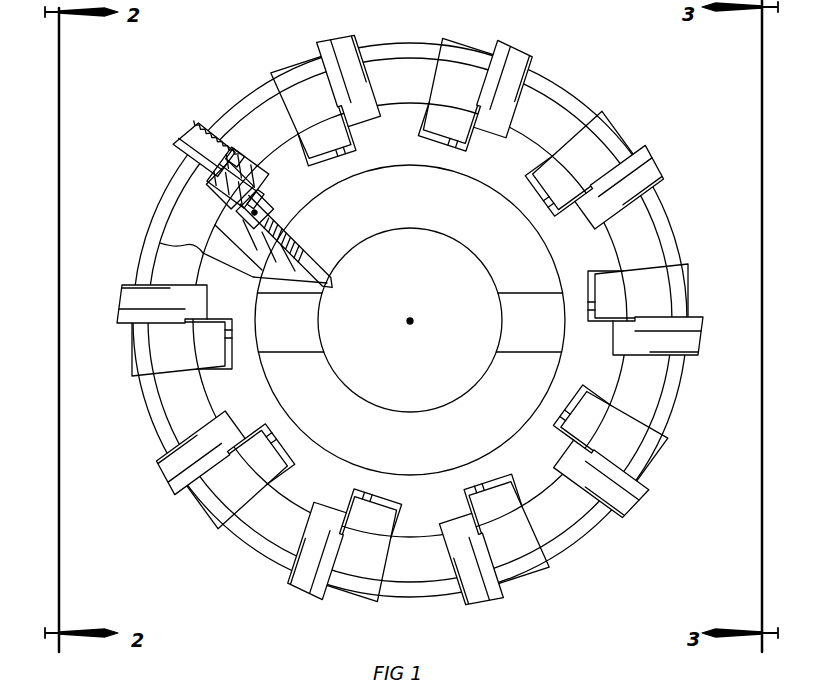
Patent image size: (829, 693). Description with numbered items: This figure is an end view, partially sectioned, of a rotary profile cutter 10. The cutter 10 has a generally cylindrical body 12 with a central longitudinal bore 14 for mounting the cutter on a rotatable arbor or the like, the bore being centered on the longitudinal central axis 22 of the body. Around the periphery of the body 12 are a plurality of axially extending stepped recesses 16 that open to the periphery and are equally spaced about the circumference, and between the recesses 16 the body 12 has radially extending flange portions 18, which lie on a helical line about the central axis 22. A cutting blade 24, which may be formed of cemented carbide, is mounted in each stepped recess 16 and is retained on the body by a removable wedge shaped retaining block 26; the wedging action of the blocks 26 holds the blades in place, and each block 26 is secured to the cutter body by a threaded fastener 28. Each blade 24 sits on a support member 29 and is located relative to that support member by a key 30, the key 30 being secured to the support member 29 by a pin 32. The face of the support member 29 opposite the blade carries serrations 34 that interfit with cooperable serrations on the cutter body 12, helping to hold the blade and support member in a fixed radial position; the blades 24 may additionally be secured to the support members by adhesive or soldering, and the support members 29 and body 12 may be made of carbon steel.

The rotary cutter 10 is at (592, 76).
The cylindrical body 12 is at (660, 212).
The central longitudinal bore 14 is at (436, 392).
The stepped recesses 16 is at (357, 147).
The flange portions 18 is at (254, 84).
The longitudinal central axis 22 is at (410, 321).
The cutting blade 24 is at (175, 146).
The wedge shaped retaining block 26 is at (168, 191).
The threaded fastener 28 is at (213, 220).
The support member 29 is at (194, 128).
The key 30 is at (268, 192).
The pin 32 is at (220, 150).
The serrations 34 is at (226, 138).